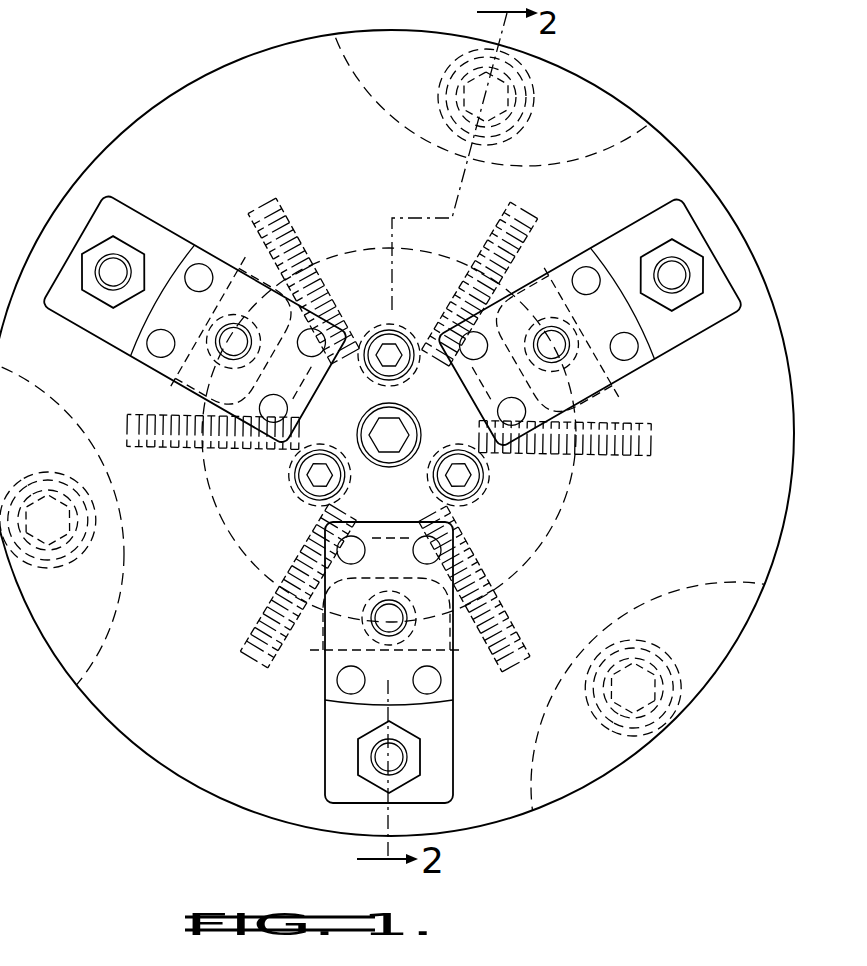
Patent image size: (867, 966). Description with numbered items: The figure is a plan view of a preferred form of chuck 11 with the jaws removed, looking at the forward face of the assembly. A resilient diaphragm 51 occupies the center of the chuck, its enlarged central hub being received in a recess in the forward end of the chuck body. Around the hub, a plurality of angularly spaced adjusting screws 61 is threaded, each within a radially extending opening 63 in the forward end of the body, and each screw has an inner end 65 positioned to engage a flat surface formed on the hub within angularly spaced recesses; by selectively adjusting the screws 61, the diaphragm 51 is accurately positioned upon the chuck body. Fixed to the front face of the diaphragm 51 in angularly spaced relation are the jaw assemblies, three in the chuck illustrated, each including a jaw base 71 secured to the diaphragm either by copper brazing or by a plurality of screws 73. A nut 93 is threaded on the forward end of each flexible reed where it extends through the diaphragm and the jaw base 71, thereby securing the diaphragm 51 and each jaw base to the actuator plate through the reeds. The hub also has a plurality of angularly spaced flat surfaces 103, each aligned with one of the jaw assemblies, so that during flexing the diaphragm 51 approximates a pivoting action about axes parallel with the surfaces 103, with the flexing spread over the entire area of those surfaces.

The chuck 11 is at (682, 124).
The resilient diaphragm 51 is at (86, 368).
The adjusting screws 61 is at (316, 221).
The radially extending opening 63 is at (340, 254).
The inner end of adjusting screw 65 is at (382, 382).
The jaw base 71 is at (157, 217).
The screws 73 is at (216, 336).
The nut 93 is at (117, 233).
The flat surfaces 103 is at (262, 396).